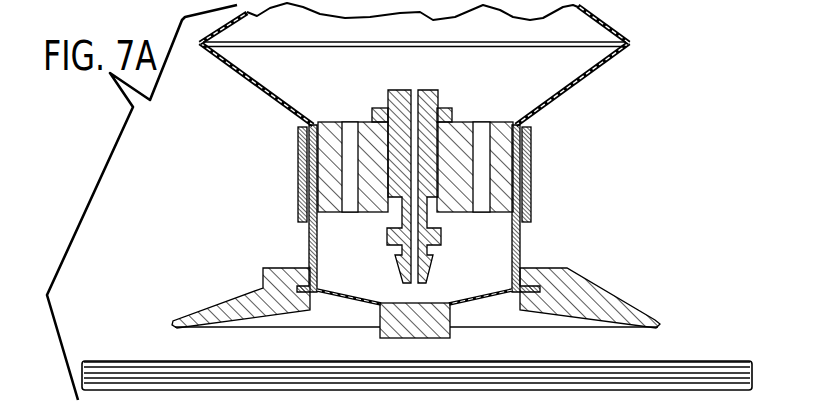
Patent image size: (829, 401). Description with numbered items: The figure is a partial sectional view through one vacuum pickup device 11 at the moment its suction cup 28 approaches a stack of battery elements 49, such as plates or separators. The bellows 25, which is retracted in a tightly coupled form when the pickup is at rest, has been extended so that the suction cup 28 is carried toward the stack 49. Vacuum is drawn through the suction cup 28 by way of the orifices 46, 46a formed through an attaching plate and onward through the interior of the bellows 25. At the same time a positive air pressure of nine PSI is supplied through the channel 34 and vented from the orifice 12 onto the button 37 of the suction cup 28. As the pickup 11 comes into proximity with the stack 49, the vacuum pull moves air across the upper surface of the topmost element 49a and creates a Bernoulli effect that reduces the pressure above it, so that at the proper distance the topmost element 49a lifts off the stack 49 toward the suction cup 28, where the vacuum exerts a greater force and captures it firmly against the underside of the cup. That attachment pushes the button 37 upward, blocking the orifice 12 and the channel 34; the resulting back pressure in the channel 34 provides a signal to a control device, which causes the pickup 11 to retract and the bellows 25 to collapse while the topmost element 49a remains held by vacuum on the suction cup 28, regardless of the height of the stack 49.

The vacuum pickup device 11 is at (560, 181).
The orifice 12 is at (427, 268).
The bellows 25 is at (587, 77).
The suction cup 28 is at (592, 298).
The channel 34 is at (410, 89).
The button 37 is at (450, 338).
The orifice 46 is at (481, 205).
The orifice 46a is at (352, 213).
The stack of battery elements 49 is at (697, 370).
The topmost element 49a is at (663, 362).